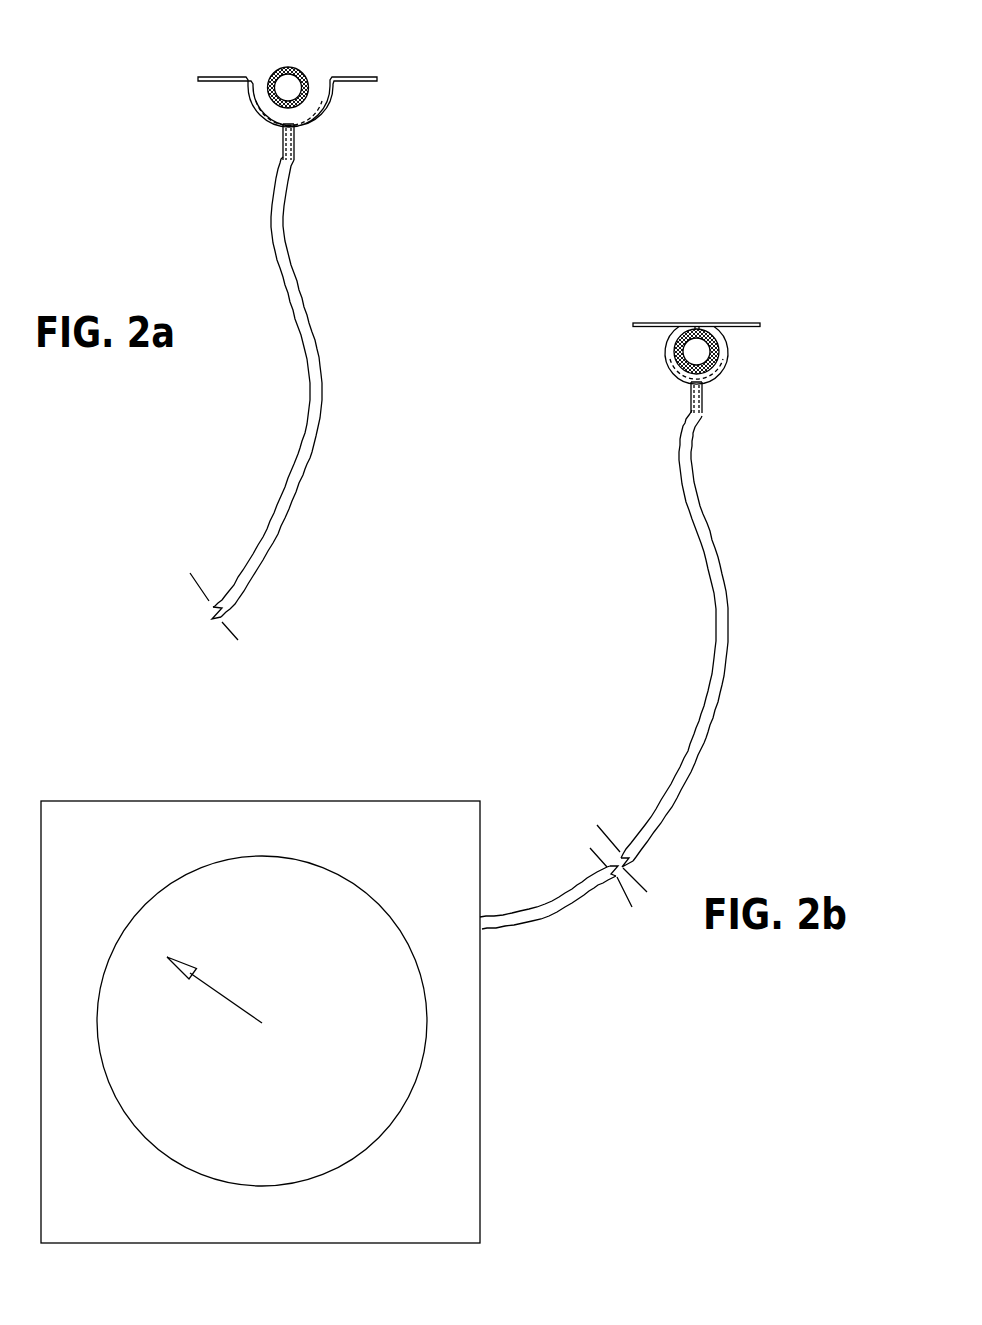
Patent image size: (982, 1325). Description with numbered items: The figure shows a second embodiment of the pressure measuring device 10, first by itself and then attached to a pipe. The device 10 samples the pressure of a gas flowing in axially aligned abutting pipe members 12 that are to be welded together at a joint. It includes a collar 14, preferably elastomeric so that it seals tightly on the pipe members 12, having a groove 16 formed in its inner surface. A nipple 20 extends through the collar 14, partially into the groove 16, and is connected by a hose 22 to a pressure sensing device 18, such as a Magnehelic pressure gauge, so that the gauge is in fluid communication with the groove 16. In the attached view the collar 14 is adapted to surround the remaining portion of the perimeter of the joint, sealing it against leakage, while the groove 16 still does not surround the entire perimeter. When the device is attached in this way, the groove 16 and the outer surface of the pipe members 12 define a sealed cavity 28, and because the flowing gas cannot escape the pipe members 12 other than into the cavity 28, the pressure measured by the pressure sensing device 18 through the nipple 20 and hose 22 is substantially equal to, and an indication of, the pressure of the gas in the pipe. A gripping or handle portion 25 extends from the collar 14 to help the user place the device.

In FIG. 2a, the pressure measuring device 10 is at (341, 452).
In FIG. 2b, the pressure measuring device 10 is at (745, 676).
In FIG. 2a, the pipe members 12 is at (303, 68).
In FIG. 2b, the pipe members 12 is at (707, 331).
In FIG. 2a, the collar 14 is at (245, 95).
In FIG. 2b, the collar 14 is at (728, 343).
In FIG. 2a, the groove 16 is at (312, 120).
In FIG. 2b, the groove 16 is at (728, 362).
In FIG. 2b, the pressure sensing device 18 is at (480, 1060).
In FIG. 2a, the nipple 20 is at (283, 155).
In FIG. 2b, the nipple 20 is at (691, 397).
In FIG. 2a, the hose 22 is at (288, 214).
In FIG. 2b, the hose 22 is at (696, 448).
In FIG. 2b, the gripping or handle portion 25 is at (635, 323).
In FIG. 2b, the sealed cavity 28 is at (673, 356).